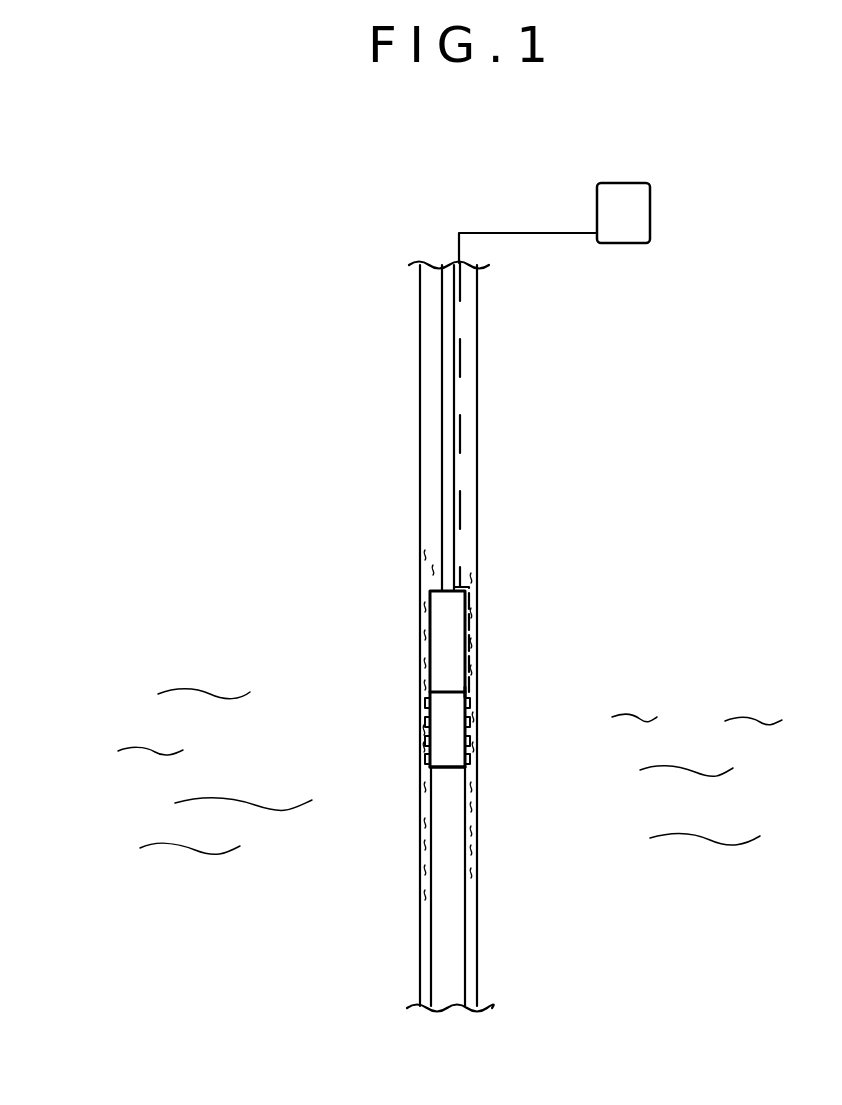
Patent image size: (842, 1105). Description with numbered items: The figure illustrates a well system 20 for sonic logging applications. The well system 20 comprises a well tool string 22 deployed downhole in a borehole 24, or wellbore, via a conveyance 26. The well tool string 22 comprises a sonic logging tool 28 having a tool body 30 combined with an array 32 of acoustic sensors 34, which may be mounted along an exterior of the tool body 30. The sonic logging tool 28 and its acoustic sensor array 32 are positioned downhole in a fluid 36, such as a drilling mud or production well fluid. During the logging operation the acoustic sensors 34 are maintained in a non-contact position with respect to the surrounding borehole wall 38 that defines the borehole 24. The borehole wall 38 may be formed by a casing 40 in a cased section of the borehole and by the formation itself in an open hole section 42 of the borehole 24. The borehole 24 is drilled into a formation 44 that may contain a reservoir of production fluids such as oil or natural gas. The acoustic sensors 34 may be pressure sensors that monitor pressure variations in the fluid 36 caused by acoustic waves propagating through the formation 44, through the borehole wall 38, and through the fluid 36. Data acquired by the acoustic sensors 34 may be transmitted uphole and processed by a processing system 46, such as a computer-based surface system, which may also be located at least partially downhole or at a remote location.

The well system 20 is at (592, 147).
The well tool string 22 is at (435, 591).
The borehole 24 is at (433, 434).
The conveyance 26 is at (442, 325).
The sonic logging tool 28 is at (470, 693).
The tool body 30 is at (445, 706).
The array 32 is at (429, 765).
The acoustic sensors 34 is at (426, 741).
The fluid 36 is at (473, 805).
The borehole wall 38 is at (427, 803).
The casing 40 is at (478, 640).
The open hole section 42 is at (475, 882).
The formation 44 is at (262, 750).
The processing system 46 is at (650, 208).